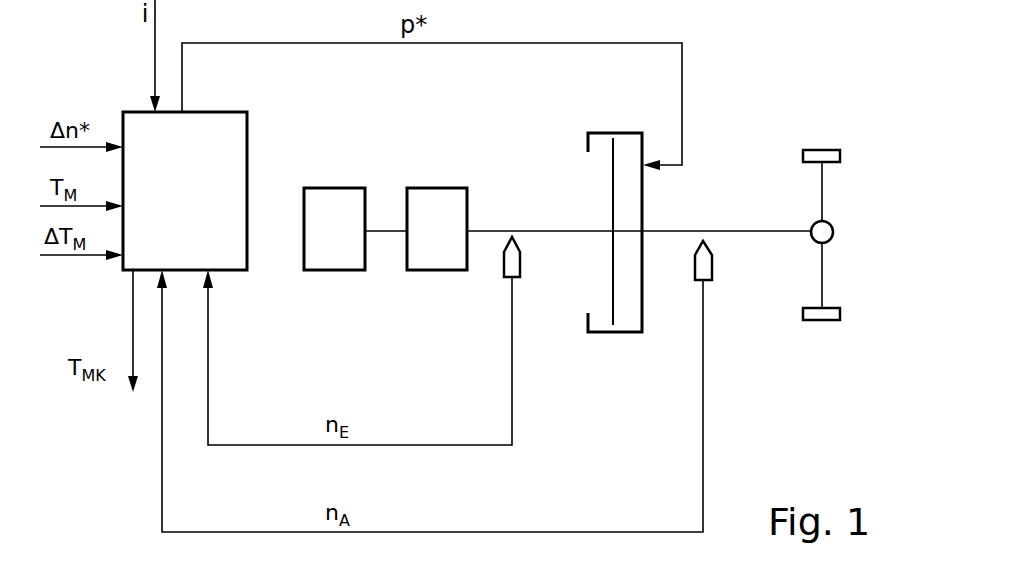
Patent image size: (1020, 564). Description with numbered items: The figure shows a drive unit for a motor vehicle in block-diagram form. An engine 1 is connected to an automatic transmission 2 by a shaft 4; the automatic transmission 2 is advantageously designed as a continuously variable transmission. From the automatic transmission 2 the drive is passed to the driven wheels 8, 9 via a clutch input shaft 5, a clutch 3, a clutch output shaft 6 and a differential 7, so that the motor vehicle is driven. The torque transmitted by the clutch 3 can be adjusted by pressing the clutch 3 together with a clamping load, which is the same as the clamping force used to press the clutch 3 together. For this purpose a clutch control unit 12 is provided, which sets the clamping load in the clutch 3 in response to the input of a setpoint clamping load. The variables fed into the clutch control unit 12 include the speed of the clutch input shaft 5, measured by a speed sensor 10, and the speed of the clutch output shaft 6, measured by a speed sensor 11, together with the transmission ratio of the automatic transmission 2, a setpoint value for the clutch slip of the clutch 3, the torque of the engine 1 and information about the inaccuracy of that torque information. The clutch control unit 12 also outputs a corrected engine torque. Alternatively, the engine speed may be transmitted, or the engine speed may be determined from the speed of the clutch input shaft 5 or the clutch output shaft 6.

The engine 1 is at (334, 229).
The automatic transmission 2 is at (437, 229).
The clutch 3 is at (597, 333).
The shaft 4 is at (389, 229).
The clutch input shaft 5 is at (554, 229).
The clutch output shaft 6 is at (696, 229).
The differential 7 is at (834, 234).
The driven wheel 8 is at (842, 152).
The driven wheel 9 is at (842, 310).
The speed sensor 10 is at (521, 262).
The speed sensor 11 is at (713, 265).
The clutch control unit 12 is at (185, 191).